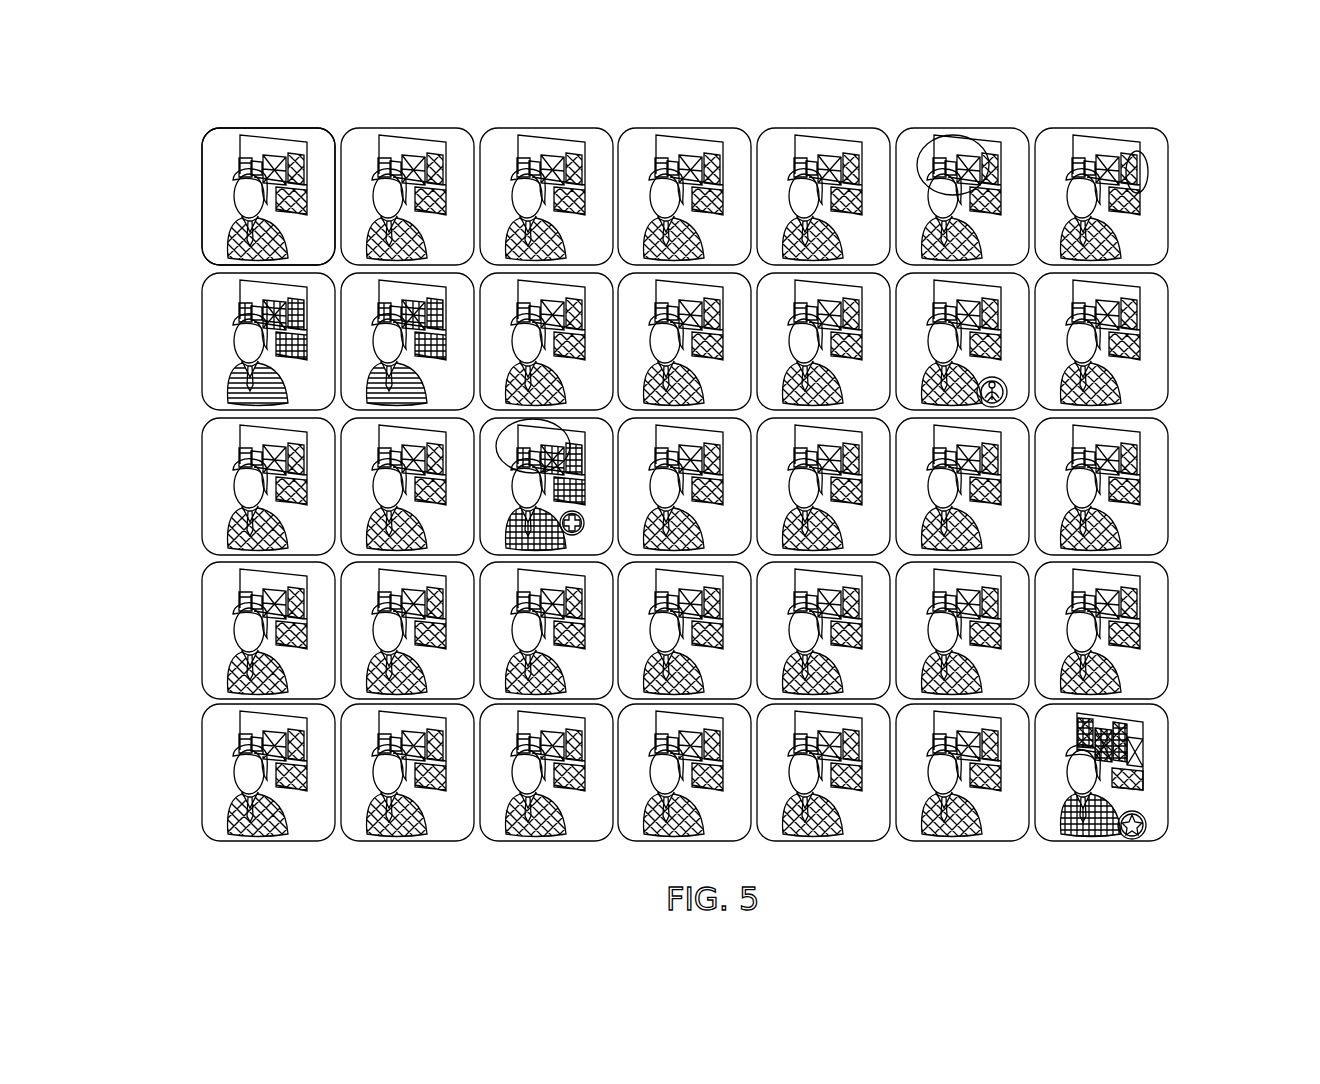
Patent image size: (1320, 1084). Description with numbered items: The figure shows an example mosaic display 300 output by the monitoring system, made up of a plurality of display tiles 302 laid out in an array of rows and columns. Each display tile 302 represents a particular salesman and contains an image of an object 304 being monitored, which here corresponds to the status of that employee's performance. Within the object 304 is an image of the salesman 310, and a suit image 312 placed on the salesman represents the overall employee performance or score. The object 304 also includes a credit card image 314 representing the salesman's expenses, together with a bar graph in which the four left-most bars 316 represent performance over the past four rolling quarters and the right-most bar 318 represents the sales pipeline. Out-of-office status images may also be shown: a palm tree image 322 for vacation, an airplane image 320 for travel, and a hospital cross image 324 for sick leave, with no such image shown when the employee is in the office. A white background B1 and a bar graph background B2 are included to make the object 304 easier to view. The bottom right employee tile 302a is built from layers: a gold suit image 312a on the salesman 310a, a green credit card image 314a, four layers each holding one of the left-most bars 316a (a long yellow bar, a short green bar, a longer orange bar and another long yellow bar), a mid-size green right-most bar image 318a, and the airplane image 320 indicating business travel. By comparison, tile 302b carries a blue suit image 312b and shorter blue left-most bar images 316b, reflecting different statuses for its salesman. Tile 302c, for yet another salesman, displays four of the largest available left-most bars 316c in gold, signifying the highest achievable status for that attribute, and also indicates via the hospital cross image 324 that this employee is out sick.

The mosaic display 300 is at (683, 483).
The display tile 302 is at (279, 127).
The bottom right employee tile 302a is at (1167, 713).
The display tile 302b is at (217, 340).
The display tile 302c is at (481, 545).
The object 304 is at (222, 145).
The salesman 310 is at (228, 667).
The salesman 310a is at (1068, 775).
The suit image 312 is at (237, 227).
The gold suit image 312a is at (1097, 830).
The blue suit image 312b is at (230, 385).
The credit card image 314 is at (297, 787).
The green credit card image 314a is at (1143, 783).
The four left-most bars 316 is at (928, 148).
The left-most bars 316a is at (1147, 727).
The left-most bar images 316b is at (232, 300).
The left-most bars 316c is at (560, 424).
The right-most bar 318 is at (1148, 178).
The right-most bar image 318a is at (1145, 754).
The airplane image 320 is at (1147, 828).
The palm tree image 322 is at (1006, 382).
The hospital cross image 324 is at (584, 517).
The white background B1 is at (212, 610).
The bar graph background B2 is at (690, 142).